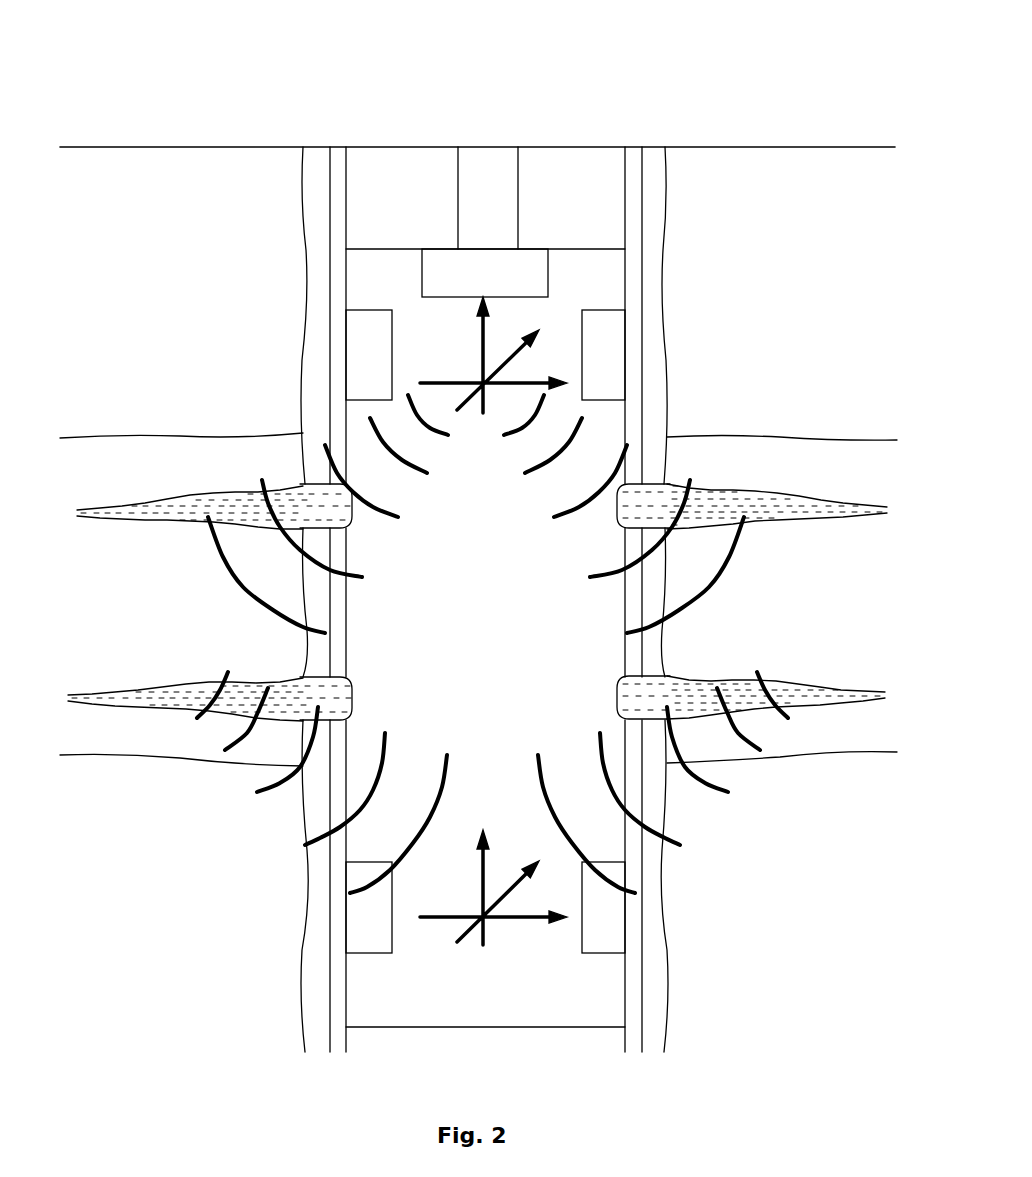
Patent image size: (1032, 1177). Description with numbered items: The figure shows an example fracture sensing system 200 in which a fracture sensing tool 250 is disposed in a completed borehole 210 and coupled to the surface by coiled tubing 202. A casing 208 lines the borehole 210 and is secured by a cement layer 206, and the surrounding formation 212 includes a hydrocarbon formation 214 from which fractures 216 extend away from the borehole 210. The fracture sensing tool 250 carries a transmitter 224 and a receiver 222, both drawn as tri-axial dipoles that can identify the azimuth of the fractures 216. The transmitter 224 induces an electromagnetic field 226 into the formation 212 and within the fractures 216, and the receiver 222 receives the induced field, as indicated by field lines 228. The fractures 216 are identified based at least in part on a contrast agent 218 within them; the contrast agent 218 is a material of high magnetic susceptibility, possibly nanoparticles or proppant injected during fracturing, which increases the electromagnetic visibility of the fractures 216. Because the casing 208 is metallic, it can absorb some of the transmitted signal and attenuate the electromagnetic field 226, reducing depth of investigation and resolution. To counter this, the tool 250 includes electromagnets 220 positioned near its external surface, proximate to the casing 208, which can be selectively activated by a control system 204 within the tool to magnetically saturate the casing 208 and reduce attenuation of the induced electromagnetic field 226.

The fracture sensing system 200 is at (613, 70).
The coiled tubing 202 is at (475, 155).
The control system 204 is at (508, 283).
The cement layer 206 is at (315, 223).
The casing 208 is at (338, 157).
The completed borehole 210 is at (667, 270).
The formation 212 is at (863, 283).
The hydrocarbon formation 214 is at (118, 490).
The fractures 216 is at (190, 683).
The contrast agent 218 is at (245, 505).
The electromagnets 220 is at (358, 353).
The receiver 222 is at (498, 920).
The transmitter 224 is at (483, 383).
The electromagnetic field 226 is at (567, 515).
The field lines 228 is at (600, 748).
The fracture sensing tool 250 is at (582, 249).